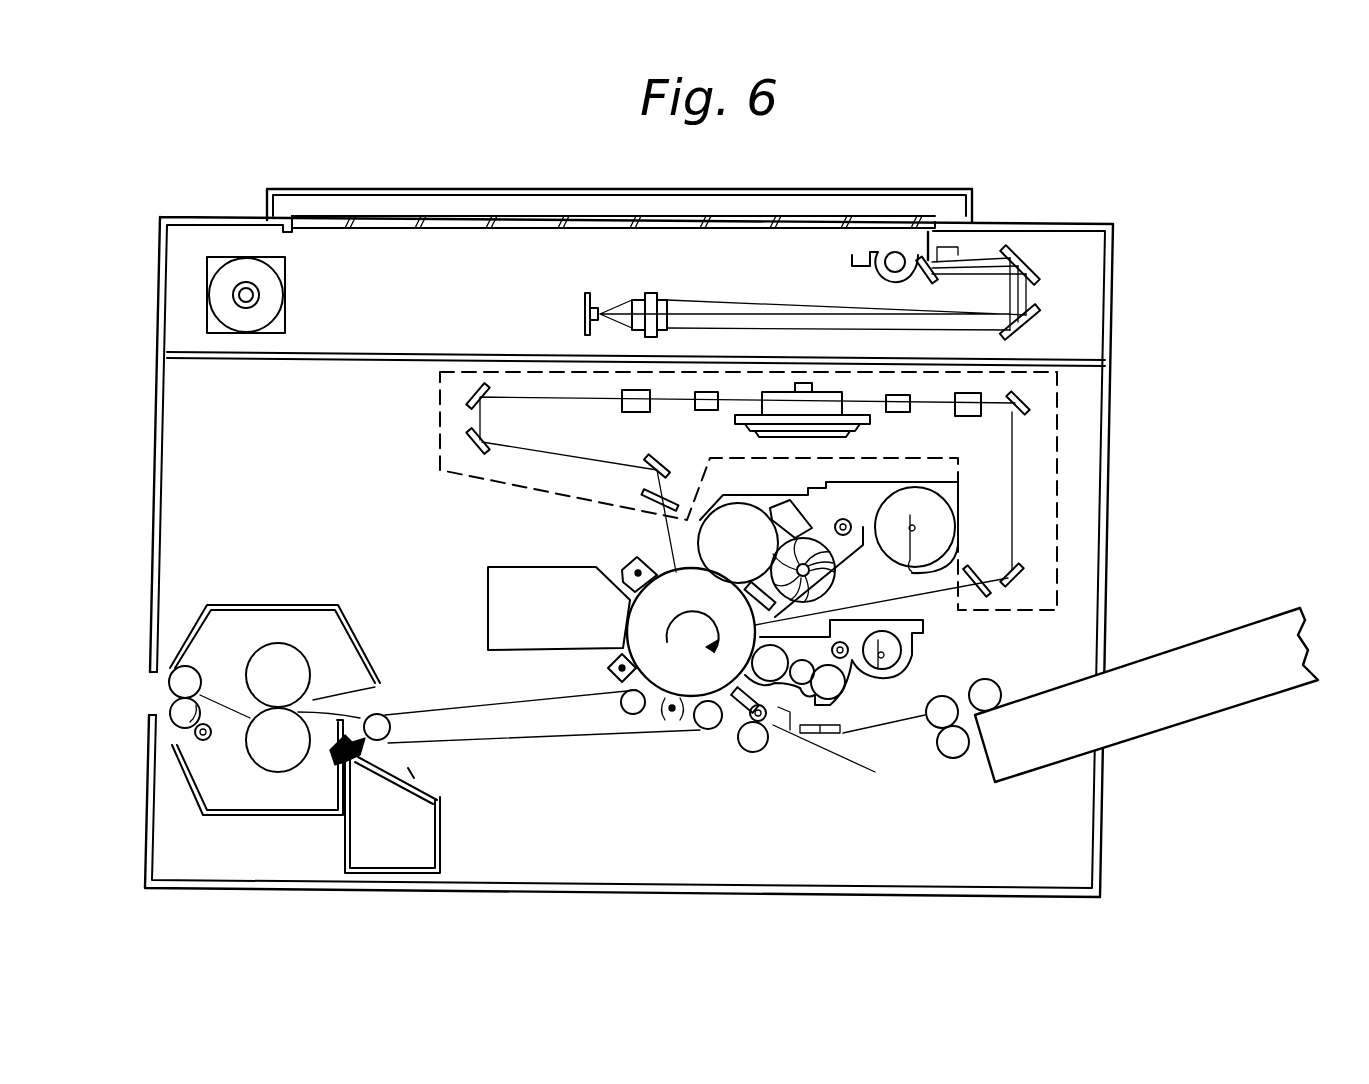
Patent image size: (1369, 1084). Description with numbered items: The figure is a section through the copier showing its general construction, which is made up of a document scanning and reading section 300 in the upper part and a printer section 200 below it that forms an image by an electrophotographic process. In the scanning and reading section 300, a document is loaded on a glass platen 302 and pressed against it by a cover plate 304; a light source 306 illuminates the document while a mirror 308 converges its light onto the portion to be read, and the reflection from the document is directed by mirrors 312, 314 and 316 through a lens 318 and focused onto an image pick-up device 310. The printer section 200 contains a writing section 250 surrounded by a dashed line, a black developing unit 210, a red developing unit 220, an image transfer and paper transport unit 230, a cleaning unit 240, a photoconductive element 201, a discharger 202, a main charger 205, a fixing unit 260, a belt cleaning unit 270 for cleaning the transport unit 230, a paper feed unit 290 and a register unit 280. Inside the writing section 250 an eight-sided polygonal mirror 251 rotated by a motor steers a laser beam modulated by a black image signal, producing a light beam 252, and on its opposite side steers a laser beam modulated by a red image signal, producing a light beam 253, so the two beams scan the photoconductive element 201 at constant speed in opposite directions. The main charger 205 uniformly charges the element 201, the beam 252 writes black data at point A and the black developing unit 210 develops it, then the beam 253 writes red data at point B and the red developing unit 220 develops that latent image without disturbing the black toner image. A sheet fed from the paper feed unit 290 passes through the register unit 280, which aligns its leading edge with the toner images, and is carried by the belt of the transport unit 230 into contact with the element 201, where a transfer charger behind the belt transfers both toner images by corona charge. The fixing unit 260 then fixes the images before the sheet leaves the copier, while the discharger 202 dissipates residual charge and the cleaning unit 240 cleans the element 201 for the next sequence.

The printer section 200 is at (1100, 508).
The photoconductive element 201 is at (630, 622).
The discharger 202 is at (608, 672).
The main charger 205 is at (650, 563).
The black developing unit 210 is at (958, 498).
The red developing unit 220 is at (915, 647).
The image transfer and paper transport unit 230 is at (615, 745).
The cleaning unit 240 is at (488, 578).
The writing section 250 is at (1060, 452).
The polygonal mirror 251 is at (845, 413).
The light beam 252 is at (548, 455).
The light beam 253 is at (1010, 545).
The fixing unit 260 is at (275, 605).
The belt cleaning unit 270 is at (425, 830).
The register unit 280 is at (786, 738).
The paper feed unit 290 is at (1215, 640).
The document scanning and reading section 300 is at (1100, 290).
The glass platen 302 is at (806, 224).
The cover plate 304 is at (952, 195).
The light source 306 is at (893, 252).
The mirror 308 is at (872, 270).
The image pick-up device 310 is at (588, 303).
The mirror 312 is at (928, 282).
The mirror 314 is at (1037, 270).
The mirror 316 is at (1028, 322).
The lens 318 is at (660, 292).